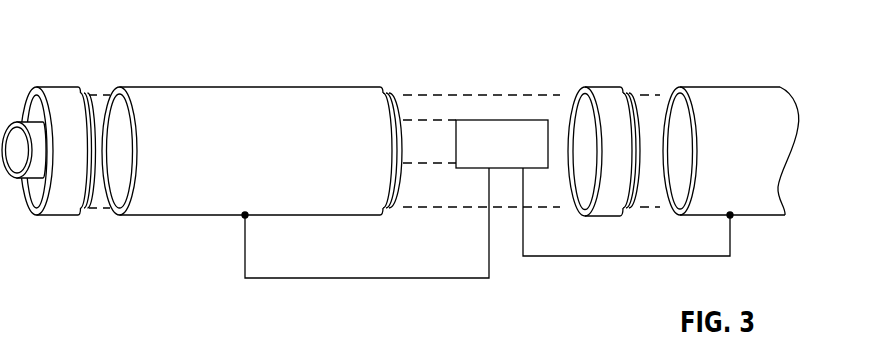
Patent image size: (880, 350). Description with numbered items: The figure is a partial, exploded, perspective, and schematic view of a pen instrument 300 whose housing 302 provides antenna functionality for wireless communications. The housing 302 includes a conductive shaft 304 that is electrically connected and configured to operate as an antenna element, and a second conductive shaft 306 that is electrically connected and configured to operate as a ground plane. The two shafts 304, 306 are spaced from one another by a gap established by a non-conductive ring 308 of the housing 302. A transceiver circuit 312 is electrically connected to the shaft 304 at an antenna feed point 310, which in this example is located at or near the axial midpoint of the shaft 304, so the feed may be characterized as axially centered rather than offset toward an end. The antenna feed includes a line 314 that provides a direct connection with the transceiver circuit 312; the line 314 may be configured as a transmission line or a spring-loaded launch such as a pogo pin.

The instrument 300 is at (130, 60).
The housing 302 is at (671, 123).
The conductive shaft 304 is at (247, 87).
The conductive shaft 306 is at (758, 87).
The non-conductive ring 308 is at (602, 87).
The antenna feed point 310 is at (243, 217).
The transceiver circuit 312 is at (480, 120).
The line 314 is at (417, 279).